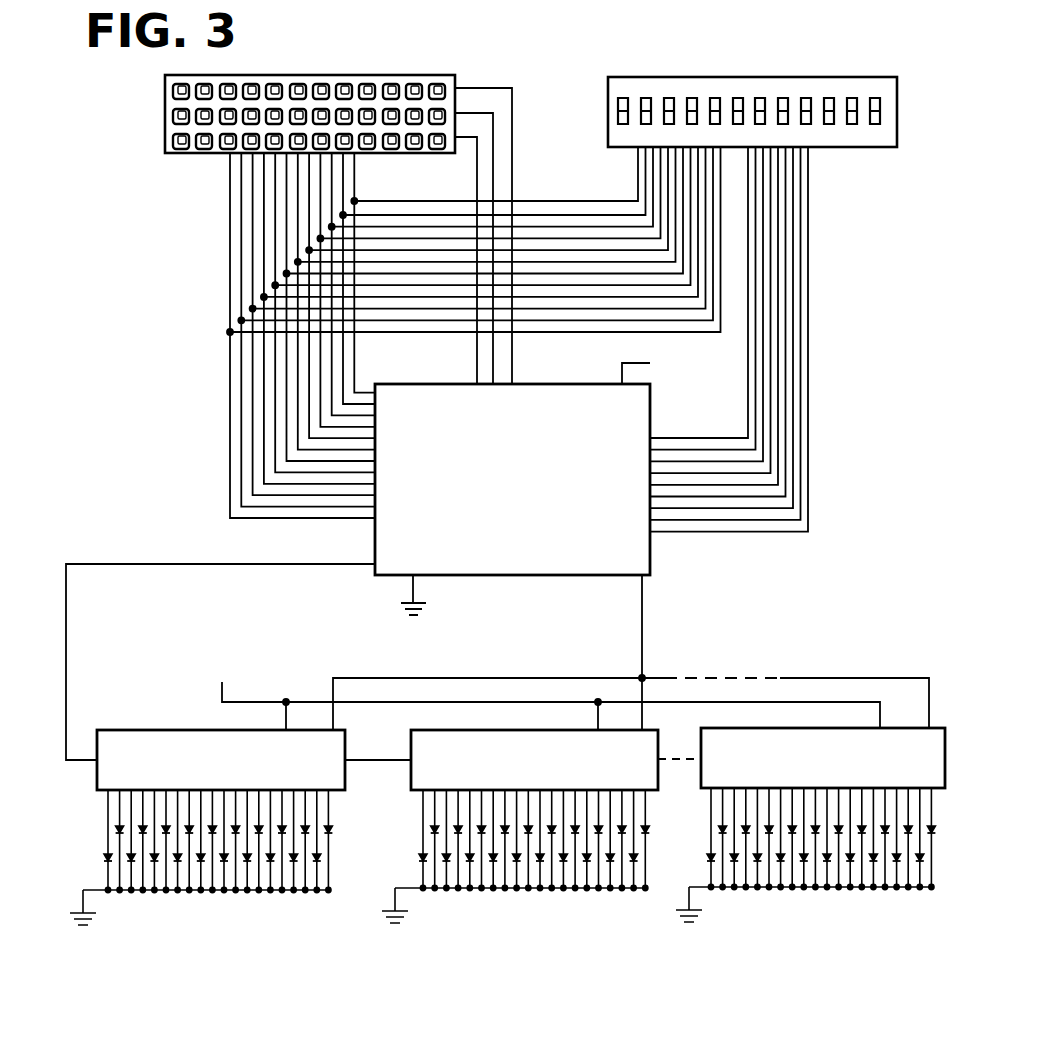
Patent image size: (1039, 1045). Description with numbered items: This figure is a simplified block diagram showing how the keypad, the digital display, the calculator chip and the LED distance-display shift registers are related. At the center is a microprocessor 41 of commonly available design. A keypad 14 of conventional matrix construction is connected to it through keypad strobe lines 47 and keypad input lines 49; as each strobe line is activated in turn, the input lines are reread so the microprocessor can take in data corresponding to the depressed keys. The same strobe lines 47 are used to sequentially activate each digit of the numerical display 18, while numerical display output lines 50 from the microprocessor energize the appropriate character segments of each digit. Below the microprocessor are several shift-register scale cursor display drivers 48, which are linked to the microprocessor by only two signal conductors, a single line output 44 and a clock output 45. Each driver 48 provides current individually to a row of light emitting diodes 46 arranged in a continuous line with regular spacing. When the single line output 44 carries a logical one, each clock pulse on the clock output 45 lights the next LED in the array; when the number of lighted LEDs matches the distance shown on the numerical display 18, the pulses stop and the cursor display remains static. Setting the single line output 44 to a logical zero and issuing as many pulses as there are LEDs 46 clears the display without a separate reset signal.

The keypad 14 is at (375, 75).
The numerical display 18 is at (795, 88).
The microprocessor 41 is at (618, 548).
The single line output 44 is at (178, 563).
The clock output 45 is at (642, 645).
The light emitting diodes 46 is at (105, 860).
The keypad strobe lines 47 is at (230, 386).
The shift-register scale cursor display driver 48 is at (115, 772).
The keypad input lines 49 is at (512, 157).
The numerical display output lines 50 is at (810, 333).